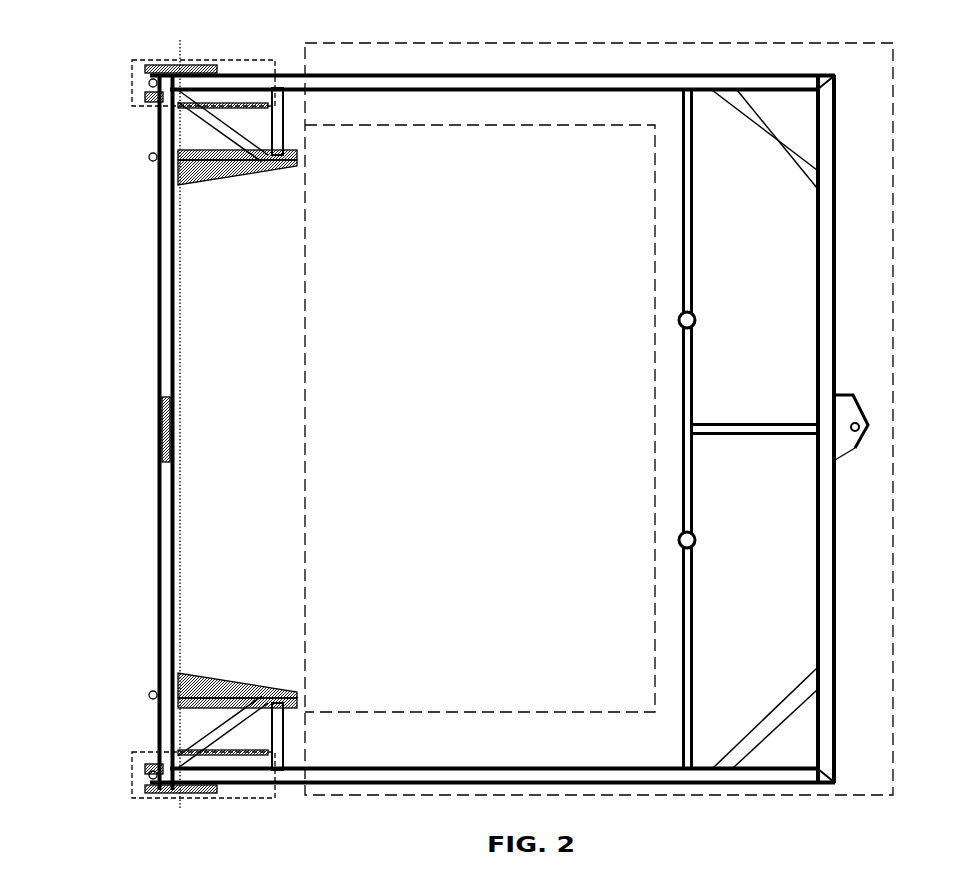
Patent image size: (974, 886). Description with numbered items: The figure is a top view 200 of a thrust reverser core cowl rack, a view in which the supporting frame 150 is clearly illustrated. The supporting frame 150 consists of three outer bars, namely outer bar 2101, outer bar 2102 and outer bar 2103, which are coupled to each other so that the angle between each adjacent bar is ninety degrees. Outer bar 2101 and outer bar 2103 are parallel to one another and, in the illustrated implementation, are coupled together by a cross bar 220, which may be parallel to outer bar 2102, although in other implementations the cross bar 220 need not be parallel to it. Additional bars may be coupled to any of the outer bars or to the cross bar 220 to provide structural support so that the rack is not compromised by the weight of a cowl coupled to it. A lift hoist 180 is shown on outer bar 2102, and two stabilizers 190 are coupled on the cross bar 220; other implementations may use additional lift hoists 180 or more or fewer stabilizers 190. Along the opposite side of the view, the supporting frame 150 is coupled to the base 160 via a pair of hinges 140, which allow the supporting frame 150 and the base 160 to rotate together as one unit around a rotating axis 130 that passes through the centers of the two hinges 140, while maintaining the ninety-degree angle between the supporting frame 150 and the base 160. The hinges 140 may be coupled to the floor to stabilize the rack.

The rotating axis 130 is at (182, 560).
The hinges 140 is at (132, 96).
The supporting frame 150 is at (750, 40).
The base 160 is at (150, 562).
The lift hoist 180 is at (860, 427).
The stabilizers 190 is at (682, 328).
The top view 200 is at (503, 36).
The outer bar 2101 is at (640, 784).
The outer bar 2102 is at (835, 205).
The outer bar 2103 is at (437, 92).
The cross bar 220 is at (690, 196).